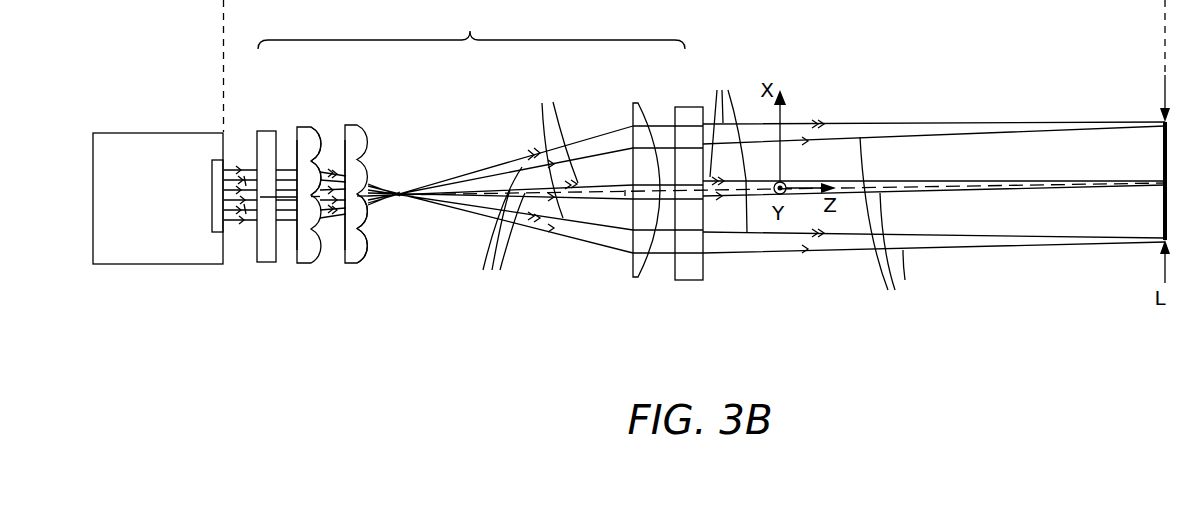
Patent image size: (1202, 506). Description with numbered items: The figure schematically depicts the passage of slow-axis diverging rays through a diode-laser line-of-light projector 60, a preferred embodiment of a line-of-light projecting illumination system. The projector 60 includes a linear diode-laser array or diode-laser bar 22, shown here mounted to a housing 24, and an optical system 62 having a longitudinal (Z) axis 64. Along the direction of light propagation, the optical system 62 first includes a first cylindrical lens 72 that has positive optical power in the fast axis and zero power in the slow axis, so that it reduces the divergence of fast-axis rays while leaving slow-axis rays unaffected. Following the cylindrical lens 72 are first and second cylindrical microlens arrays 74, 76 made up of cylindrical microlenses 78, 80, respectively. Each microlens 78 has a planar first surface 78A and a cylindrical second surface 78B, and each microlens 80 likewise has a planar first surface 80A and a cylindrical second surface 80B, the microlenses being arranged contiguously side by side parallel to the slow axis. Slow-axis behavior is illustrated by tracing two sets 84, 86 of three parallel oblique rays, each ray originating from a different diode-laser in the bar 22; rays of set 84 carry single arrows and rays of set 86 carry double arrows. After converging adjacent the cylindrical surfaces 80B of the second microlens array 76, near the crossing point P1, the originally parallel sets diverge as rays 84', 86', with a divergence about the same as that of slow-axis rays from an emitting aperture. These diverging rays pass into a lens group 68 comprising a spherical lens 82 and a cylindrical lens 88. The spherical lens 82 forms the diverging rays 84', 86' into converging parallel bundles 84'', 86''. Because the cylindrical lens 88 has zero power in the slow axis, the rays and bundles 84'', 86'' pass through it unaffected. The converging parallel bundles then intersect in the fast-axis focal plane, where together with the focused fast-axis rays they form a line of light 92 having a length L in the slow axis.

The diode-laser bar 22 is at (208, 168).
The light source housing 24 is at (120, 152).
The diode-laser line-of-light projector 60 is at (776, 328).
The optical system 62 is at (471, 27).
The longitudinal (Z) axis 64 is at (625, 193).
The lens group 68 is at (659, 300).
The first cylindrical lens 72 is at (263, 262).
The first cylindrical microlens array 74 is at (307, 270).
The second cylindrical microlens array 76 is at (357, 118).
The cylindrical microlens 78 is at (321, 137).
The planar first surface 78A is at (295, 131).
The cylindrical second surface 78B is at (318, 128).
The cylindrical microlens 80 is at (368, 249).
The planar first surface 80A is at (340, 258).
The cylindrical second surface 80B is at (361, 264).
The spherical lens 82 is at (632, 118).
The set of parallel oblique rays 84 is at (238, 118).
The diverging rays 84' is at (499, 233).
The converging parallel bundle of rays 84'' is at (894, 225).
The set of parallel oblique rays 86 is at (208, 250).
The diverging rays 86' is at (545, 149).
The converging parallel bundle of rays 86'' is at (728, 147).
The cylindrical lens 88 is at (690, 112).
The line of light 92 is at (1155, 211).
The focal point P1 is at (373, 182).